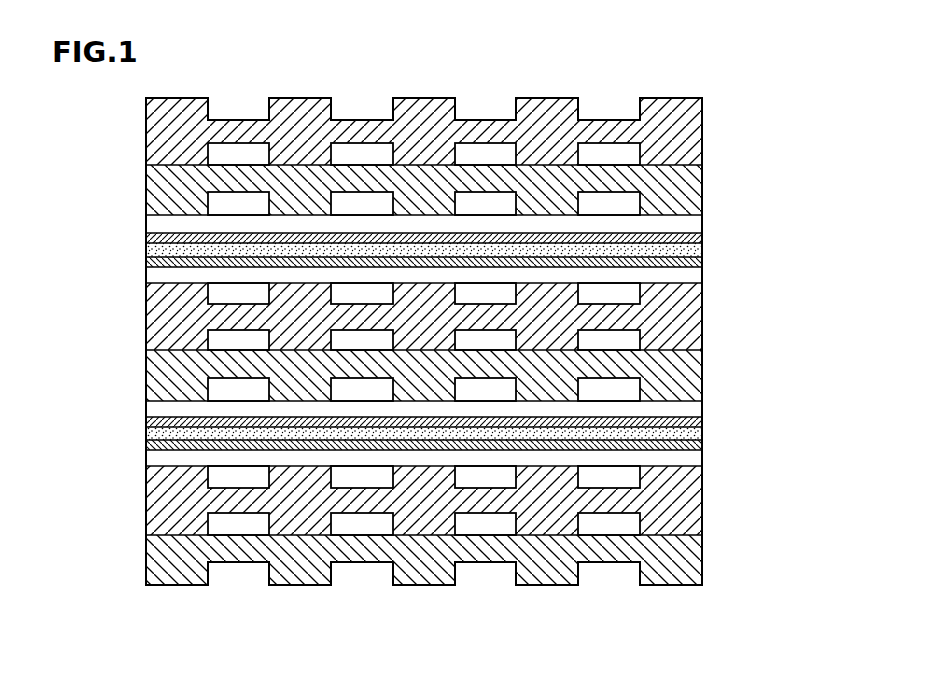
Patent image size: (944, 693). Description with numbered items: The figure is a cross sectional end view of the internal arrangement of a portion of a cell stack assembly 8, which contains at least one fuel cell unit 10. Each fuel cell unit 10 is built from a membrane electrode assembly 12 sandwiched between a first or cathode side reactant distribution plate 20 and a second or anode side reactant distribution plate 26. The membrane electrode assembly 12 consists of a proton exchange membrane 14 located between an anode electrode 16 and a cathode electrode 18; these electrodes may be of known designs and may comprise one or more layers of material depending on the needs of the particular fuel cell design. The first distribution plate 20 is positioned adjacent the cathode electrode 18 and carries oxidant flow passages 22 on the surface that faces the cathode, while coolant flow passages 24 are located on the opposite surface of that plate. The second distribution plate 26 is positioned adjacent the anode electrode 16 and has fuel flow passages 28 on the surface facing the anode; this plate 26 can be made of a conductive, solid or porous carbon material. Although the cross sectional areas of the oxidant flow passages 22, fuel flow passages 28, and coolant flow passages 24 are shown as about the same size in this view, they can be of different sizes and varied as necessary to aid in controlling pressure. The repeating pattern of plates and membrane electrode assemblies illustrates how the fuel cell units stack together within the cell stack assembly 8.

The cell stack assembly 8 is at (117, 138).
The fuel cell unit 10 is at (788, 143).
The membrane electrode assembly 12 is at (476, 340).
The proton exchange membrane 14 is at (700, 250).
The anode electrode 16 is at (707, 213).
The cathode electrode 18 is at (707, 252).
The first reactant distribution plate 20 is at (175, 317).
The oxidant flow passages 22 is at (622, 292).
The coolant flow passages 24 is at (625, 152).
The second reactant distribution plate 26 is at (148, 192).
The fuel flow passages 28 is at (623, 203).